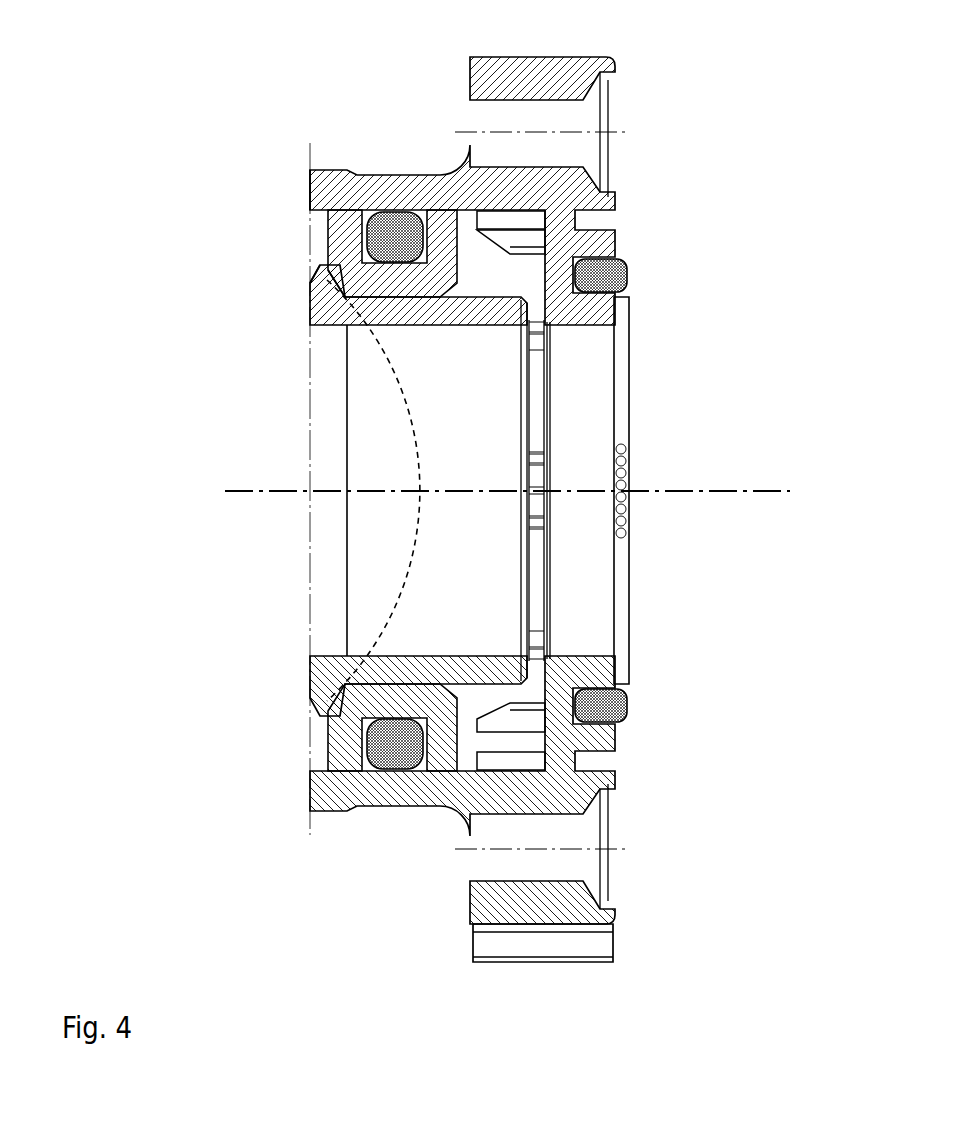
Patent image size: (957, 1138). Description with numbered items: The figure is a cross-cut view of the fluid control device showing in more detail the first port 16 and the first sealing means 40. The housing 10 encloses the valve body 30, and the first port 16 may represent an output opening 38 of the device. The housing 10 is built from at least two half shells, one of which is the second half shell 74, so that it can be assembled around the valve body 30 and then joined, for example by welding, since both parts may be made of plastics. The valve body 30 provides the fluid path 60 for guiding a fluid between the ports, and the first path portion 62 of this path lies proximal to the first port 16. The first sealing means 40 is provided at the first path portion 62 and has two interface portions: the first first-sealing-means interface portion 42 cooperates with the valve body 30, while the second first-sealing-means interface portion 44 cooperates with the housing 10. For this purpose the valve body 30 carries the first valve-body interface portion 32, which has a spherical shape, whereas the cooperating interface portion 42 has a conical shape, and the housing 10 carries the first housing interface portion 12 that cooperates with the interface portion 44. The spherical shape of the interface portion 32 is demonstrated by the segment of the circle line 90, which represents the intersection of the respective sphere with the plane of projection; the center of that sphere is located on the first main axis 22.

The housing 10 is at (392, 174).
The first housing interface portion 12 is at (457, 251).
The first port 16 is at (550, 570).
The first main axis 22 is at (705, 491).
The valve body 30 is at (313, 670).
The first valve-body interface portion 32 is at (310, 288).
The output opening 38 is at (550, 395).
The first sealing means 40 is at (381, 276).
The first first-sealing-means interface portion 42 is at (335, 268).
The second first-sealing-means interface portion 44 is at (449, 237).
The fluid path 60 is at (276, 549).
The first path portion 62 is at (474, 579).
The second half shell 74 is at (331, 166).
The segment of the circle line 90 is at (418, 513).